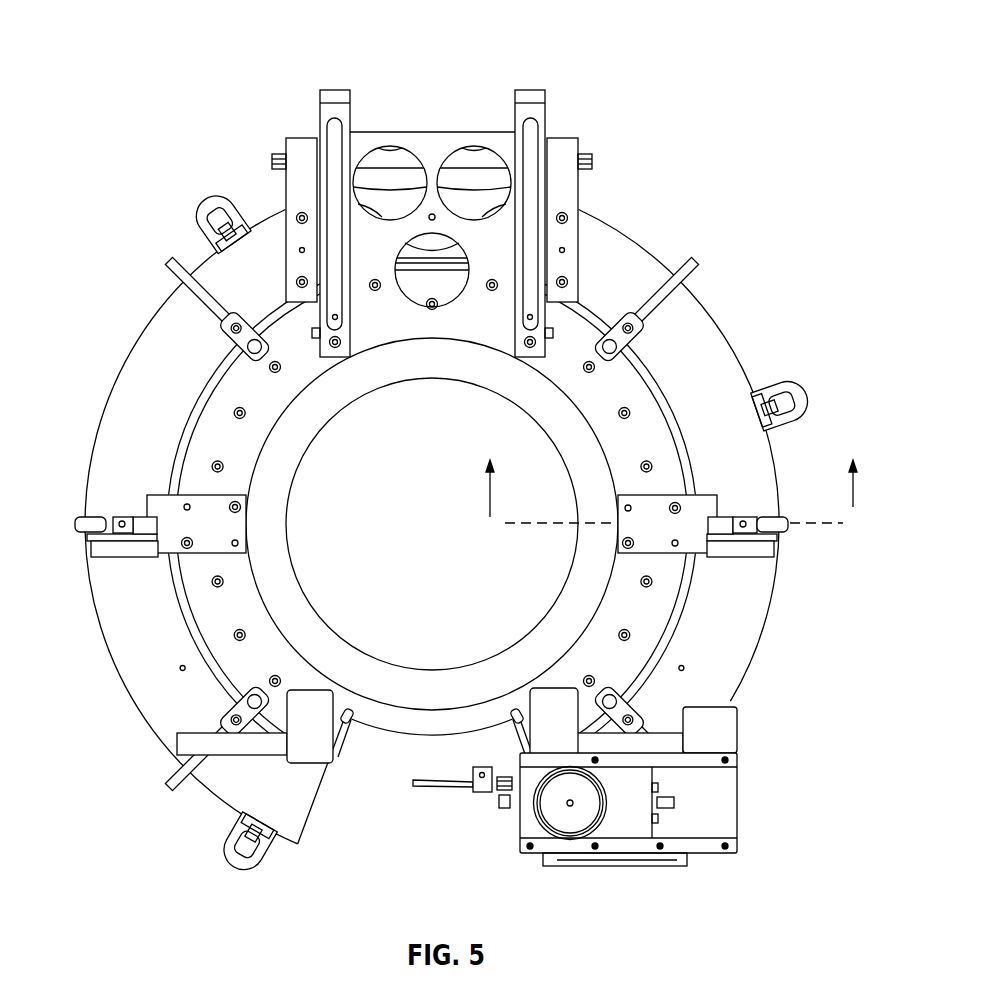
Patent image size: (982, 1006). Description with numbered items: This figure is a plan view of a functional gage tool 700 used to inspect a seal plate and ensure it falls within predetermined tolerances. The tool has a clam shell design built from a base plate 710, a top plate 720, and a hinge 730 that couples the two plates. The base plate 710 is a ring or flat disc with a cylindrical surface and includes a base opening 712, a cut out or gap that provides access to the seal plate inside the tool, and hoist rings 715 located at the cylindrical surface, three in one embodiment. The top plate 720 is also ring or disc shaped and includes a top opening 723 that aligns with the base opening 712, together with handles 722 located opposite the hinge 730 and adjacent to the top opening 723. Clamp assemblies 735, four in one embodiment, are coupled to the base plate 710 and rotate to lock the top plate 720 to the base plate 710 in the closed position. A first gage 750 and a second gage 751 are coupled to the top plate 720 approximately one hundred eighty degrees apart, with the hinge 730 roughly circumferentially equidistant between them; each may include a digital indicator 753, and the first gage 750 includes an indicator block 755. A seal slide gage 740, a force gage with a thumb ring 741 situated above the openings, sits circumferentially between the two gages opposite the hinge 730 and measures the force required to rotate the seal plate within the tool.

The functional gage tool 700 is at (453, 459).
The base plate 710 is at (120, 673).
The base opening 712 is at (312, 816).
The hoist rings 715 is at (210, 214).
The top plate 720 is at (181, 580).
The handles 722 is at (242, 744).
The top opening 723 is at (347, 724).
The hinge 730 is at (433, 140).
The clamp assemblies 735 is at (222, 320).
The seal slide gage 740 is at (634, 832).
The thumb ring 741 is at (443, 789).
The first gage 750 is at (726, 517).
The second gage 751 is at (135, 520).
The digital indicator 753 is at (120, 550).
The indicator block 755 is at (200, 507).